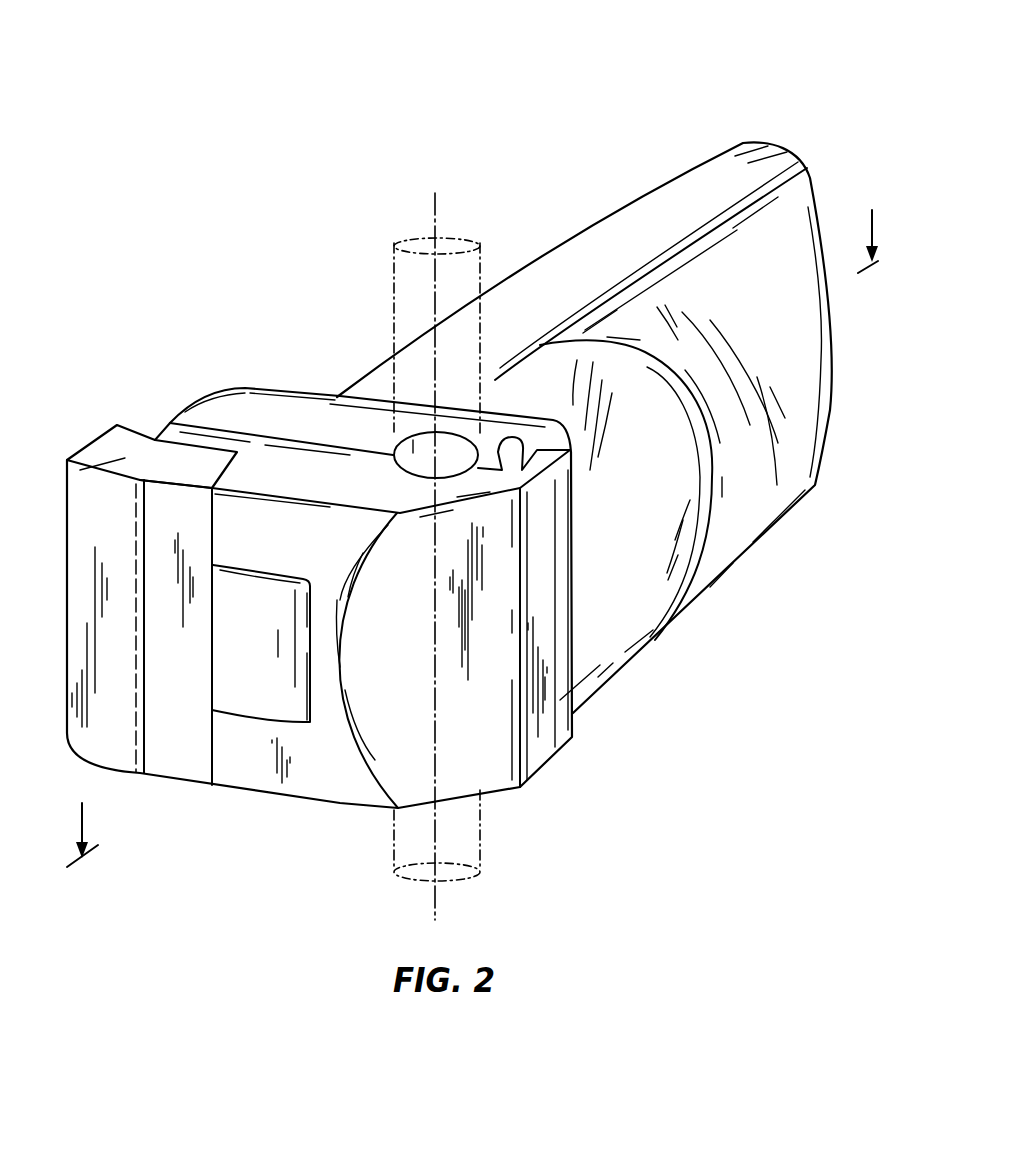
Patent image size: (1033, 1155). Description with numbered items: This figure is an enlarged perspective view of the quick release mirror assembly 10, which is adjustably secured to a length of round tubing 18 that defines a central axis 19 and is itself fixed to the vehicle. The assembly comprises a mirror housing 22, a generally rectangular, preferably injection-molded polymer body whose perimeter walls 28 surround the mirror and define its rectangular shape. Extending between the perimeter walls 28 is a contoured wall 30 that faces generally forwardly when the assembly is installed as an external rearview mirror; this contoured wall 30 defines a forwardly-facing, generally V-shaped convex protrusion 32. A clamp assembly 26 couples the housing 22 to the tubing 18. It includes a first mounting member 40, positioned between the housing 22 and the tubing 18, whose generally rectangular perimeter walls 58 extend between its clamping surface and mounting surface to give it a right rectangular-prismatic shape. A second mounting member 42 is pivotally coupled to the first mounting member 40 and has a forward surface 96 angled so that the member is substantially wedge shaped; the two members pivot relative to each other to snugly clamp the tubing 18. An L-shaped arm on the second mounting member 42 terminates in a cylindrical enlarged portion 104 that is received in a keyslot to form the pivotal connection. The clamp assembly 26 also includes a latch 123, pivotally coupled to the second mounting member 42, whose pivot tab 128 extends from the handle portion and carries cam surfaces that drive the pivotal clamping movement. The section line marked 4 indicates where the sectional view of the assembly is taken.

The quick release mirror assembly 10 is at (474, 470).
The section line 4- 4 is at (472, 526).
The round tubing 18 is at (408, 270).
The central axis 19 is at (434, 248).
The mirror housing 22 is at (607, 438).
The clamp assembly 26 is at (336, 600).
The perimeter walls 28 is at (407, 332).
The contoured wall 30 is at (740, 545).
The convex protrusion 32 is at (605, 652).
The first mounting member 40 is at (257, 410).
The second mounting member 42 is at (345, 798).
The perimeter walls 58 is at (568, 735).
The forward surface 96 is at (498, 780).
The cylindrical enlarged portion 104 is at (512, 442).
The latch 123 is at (120, 521).
The pivot tab 128 is at (240, 702).